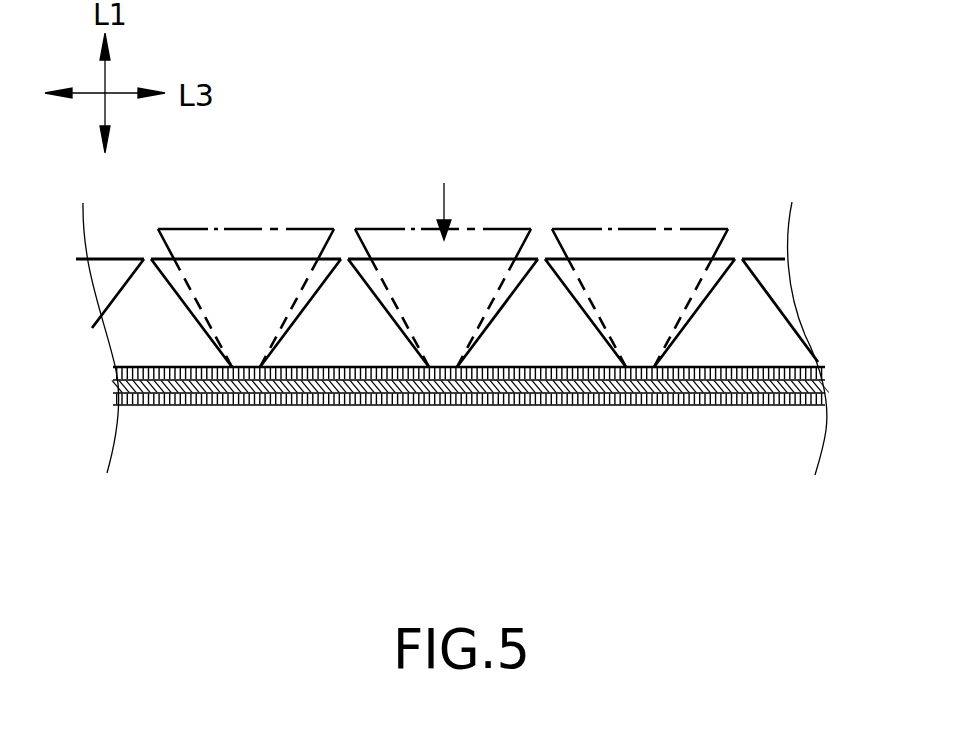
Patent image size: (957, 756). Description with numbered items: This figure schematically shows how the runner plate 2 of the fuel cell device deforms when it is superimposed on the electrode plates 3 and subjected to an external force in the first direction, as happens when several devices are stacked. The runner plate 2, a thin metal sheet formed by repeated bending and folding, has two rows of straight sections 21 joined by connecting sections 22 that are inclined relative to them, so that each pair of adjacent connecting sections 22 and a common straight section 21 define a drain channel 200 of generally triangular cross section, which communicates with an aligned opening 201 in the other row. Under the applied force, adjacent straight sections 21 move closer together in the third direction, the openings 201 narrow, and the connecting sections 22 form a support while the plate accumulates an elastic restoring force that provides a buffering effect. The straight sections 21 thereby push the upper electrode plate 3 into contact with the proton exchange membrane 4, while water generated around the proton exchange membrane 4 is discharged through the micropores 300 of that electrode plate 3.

The runner plate 2 is at (760, 156).
The straight section 21 is at (248, 255).
The connecting section 22 is at (593, 322).
The drain channel 200 is at (237, 342).
The opening 201 is at (542, 258).
The micropore 300 is at (152, 367).
The electrode plate 3 is at (822, 372).
The proton exchange membrane 4 is at (822, 387).